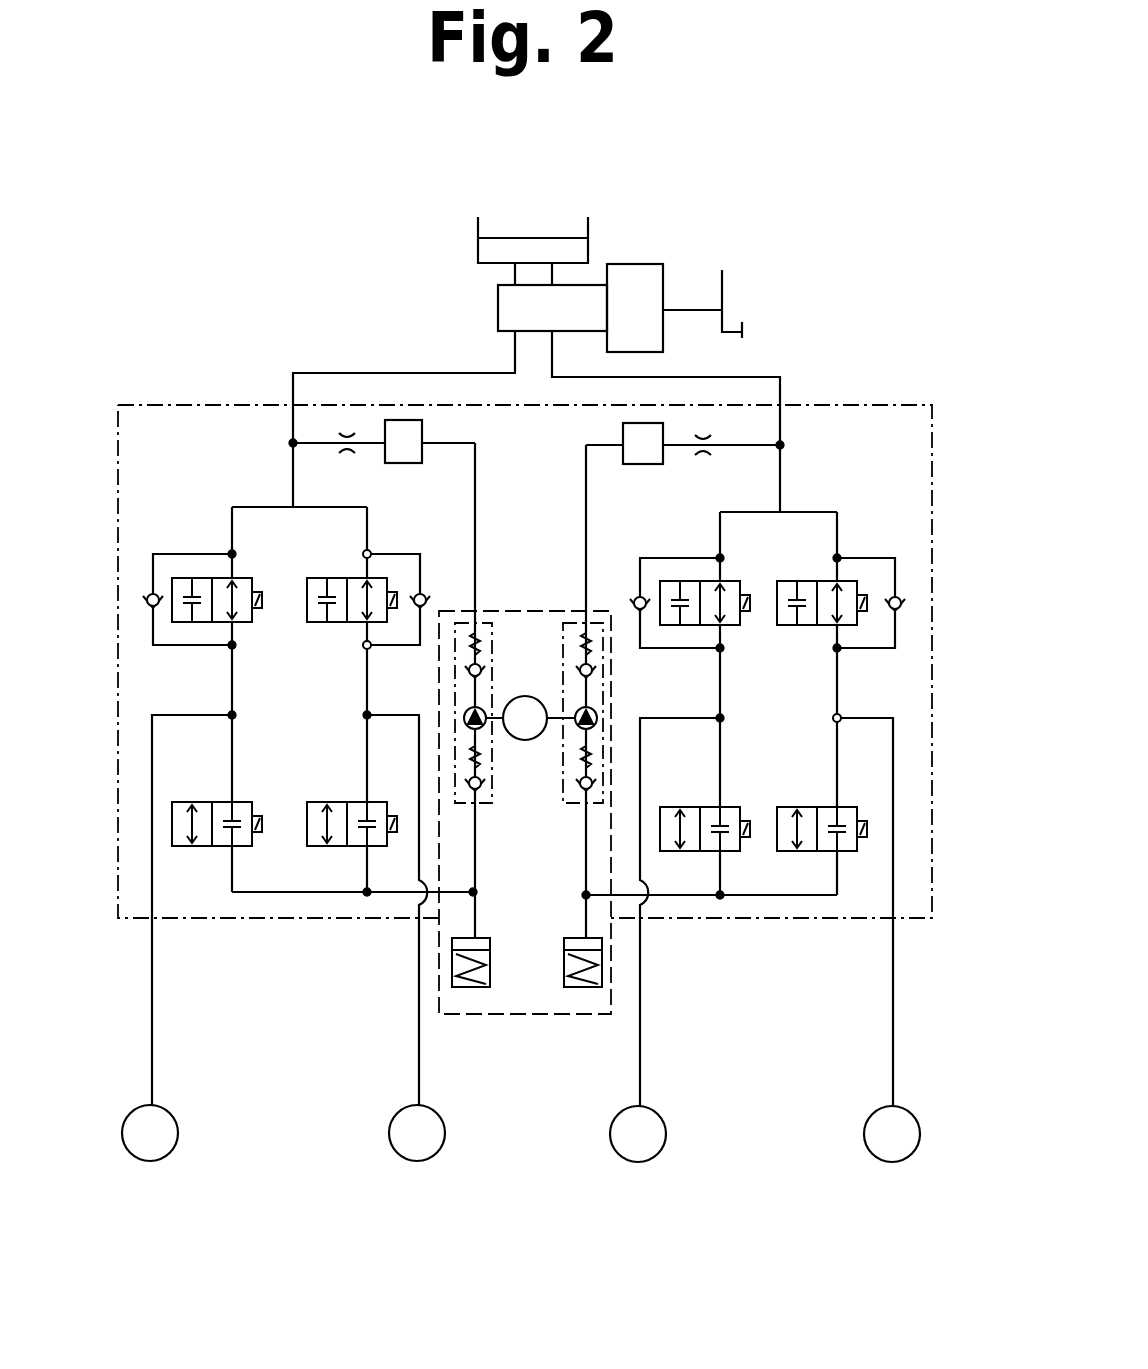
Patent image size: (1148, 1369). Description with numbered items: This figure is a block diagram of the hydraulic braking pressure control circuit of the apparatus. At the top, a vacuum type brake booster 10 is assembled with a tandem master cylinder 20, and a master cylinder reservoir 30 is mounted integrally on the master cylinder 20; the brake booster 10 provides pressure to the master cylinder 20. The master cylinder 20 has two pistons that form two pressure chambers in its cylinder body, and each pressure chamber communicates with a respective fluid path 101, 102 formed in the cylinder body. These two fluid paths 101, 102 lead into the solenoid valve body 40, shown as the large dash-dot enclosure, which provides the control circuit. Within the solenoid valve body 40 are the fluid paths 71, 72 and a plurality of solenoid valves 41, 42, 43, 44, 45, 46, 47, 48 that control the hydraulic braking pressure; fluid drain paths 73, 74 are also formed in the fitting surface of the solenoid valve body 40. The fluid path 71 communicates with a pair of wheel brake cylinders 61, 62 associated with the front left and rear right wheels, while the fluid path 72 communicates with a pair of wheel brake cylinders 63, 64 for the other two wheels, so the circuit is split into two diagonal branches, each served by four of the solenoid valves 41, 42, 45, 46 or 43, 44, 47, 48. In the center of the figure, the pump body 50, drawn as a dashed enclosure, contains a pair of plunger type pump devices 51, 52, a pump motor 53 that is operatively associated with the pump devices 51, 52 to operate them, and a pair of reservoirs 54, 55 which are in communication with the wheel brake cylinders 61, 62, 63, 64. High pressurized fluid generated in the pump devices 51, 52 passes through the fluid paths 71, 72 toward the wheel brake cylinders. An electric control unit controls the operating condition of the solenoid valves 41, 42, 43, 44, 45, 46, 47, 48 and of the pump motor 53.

The brake booster 10 is at (648, 268).
The master cylinder 20 is at (481, 296).
The master cylinder reservoir 30 is at (575, 218).
The solenoid valve body 40 is at (190, 402).
The solenoid valve 41 is at (243, 624).
The solenoid valve 42 is at (335, 624).
The solenoid valve 43 is at (731, 627).
The solenoid valve 44 is at (808, 627).
The solenoid valve 45 is at (246, 802).
The solenoid valve 46 is at (322, 802).
The solenoid valve 47 is at (729, 807).
The solenoid valve 48 is at (801, 807).
The pump body 50 is at (525, 796).
The pump device 51 is at (490, 622).
The pump device 52 is at (578, 622).
The pump motor 53 is at (526, 741).
The reservoir 54 is at (466, 988).
The reservoir 55 is at (582, 988).
The wheel brake cylinder 61 is at (178, 1140).
The wheel brake cylinder 62 is at (389, 1143).
The wheel brake cylinder 63 is at (615, 1151).
The wheel brake cylinder 64 is at (866, 1158).
The fluid path 71 is at (293, 479).
The fluid path 72 is at (780, 481).
The fluid drain path 73 is at (293, 426).
The fluid drain path 74 is at (780, 432).
The fluid path 101 is at (512, 353).
The fluid path 102 is at (550, 362).